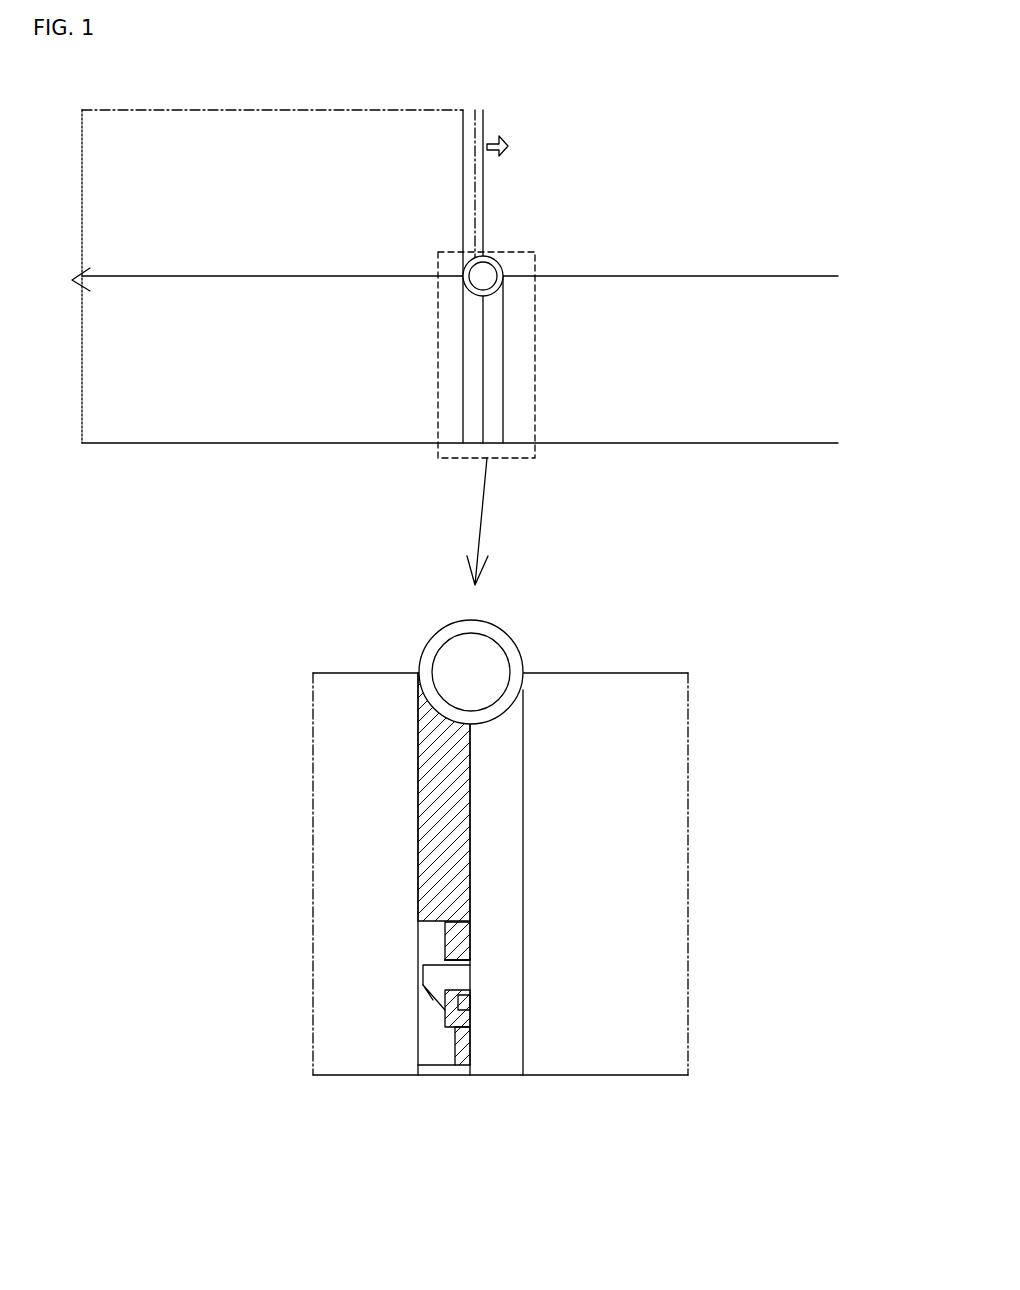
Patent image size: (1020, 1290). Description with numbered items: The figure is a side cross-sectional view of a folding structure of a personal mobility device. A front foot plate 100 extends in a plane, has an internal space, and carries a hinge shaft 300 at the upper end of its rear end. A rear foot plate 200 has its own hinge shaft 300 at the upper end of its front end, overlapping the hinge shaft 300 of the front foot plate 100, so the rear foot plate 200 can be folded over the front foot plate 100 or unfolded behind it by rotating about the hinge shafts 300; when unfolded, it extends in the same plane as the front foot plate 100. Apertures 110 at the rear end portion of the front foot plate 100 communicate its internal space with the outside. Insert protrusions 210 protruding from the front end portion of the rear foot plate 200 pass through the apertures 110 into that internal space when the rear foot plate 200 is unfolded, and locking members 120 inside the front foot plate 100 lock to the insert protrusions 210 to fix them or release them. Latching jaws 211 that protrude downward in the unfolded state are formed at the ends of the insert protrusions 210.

The front foot plate 100 is at (235, 423).
The rear foot plate 200 is at (727, 422).
The hinge shaft 300 is at (492, 260).
The insert protrusion 210 is at (420, 978).
The latching jaw 211 is at (425, 1005).
The aperture 110 is at (470, 1003).
The locking member 120 is at (455, 1030).